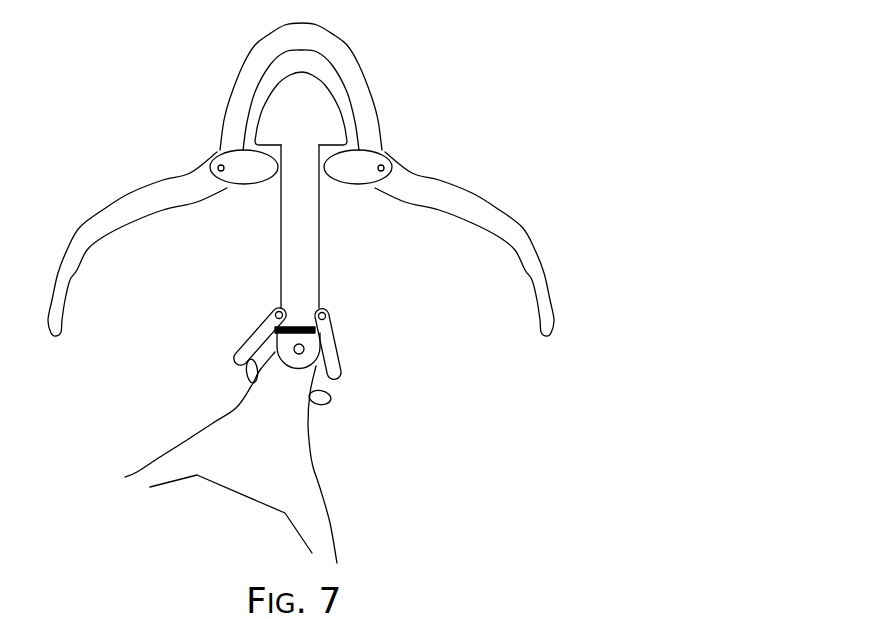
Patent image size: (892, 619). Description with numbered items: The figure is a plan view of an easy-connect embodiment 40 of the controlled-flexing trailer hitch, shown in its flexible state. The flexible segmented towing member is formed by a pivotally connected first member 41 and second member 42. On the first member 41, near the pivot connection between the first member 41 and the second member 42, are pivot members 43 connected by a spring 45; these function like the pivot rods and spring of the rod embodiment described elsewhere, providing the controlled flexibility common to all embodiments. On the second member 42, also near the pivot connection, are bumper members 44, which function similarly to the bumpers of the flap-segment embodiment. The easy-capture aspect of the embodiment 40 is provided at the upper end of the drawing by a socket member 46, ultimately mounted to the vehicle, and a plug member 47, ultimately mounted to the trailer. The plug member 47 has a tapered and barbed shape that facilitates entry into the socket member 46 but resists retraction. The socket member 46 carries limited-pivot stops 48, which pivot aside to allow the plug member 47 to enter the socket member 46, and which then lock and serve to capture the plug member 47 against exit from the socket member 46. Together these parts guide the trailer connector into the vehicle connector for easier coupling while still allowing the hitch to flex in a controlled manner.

The easy-connect embodiment 40 is at (525, 37).
The first member 41 is at (308, 262).
The second member 42 is at (303, 473).
The pivot members 43 is at (250, 343).
The bumper members 44 is at (250, 378).
The spring 45 is at (303, 320).
The socket member 46 is at (342, 58).
The plug member 47 is at (320, 105).
The limited-pivot stops 48 is at (237, 160).